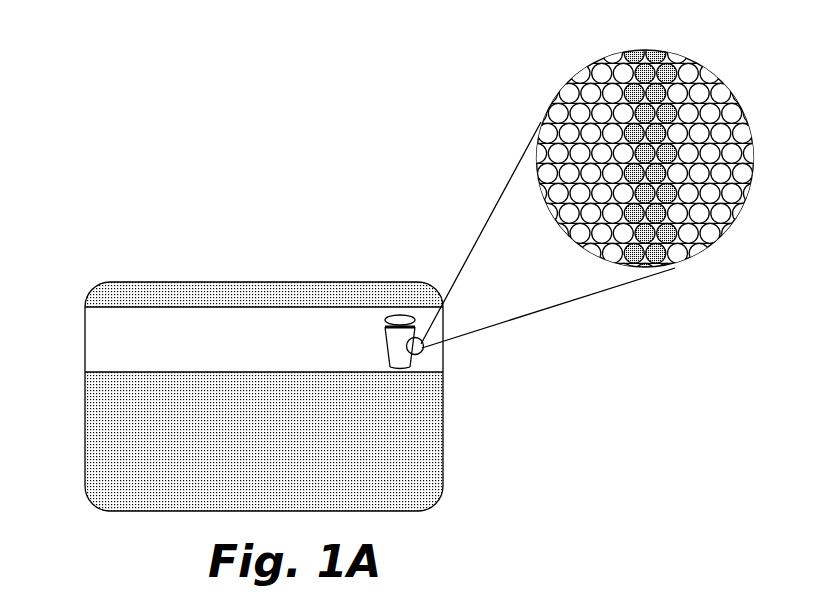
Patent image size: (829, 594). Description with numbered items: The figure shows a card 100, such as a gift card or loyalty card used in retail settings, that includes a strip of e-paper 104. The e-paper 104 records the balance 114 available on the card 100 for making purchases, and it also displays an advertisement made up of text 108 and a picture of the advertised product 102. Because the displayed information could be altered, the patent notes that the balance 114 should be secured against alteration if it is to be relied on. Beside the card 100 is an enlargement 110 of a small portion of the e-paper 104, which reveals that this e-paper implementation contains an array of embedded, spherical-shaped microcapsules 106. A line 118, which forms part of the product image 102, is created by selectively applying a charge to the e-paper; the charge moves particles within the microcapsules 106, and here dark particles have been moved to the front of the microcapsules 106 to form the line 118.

The card 100 is at (138, 241).
The picture of the advertised product 102 is at (377, 308).
The strip of e-paper 104 is at (241, 339).
The microcapsules 106 is at (738, 192).
The text 108 is at (285, 295).
The enlargement 110 is at (585, 68).
The balance 114 is at (700, 38).
The line 118 is at (420, 347).